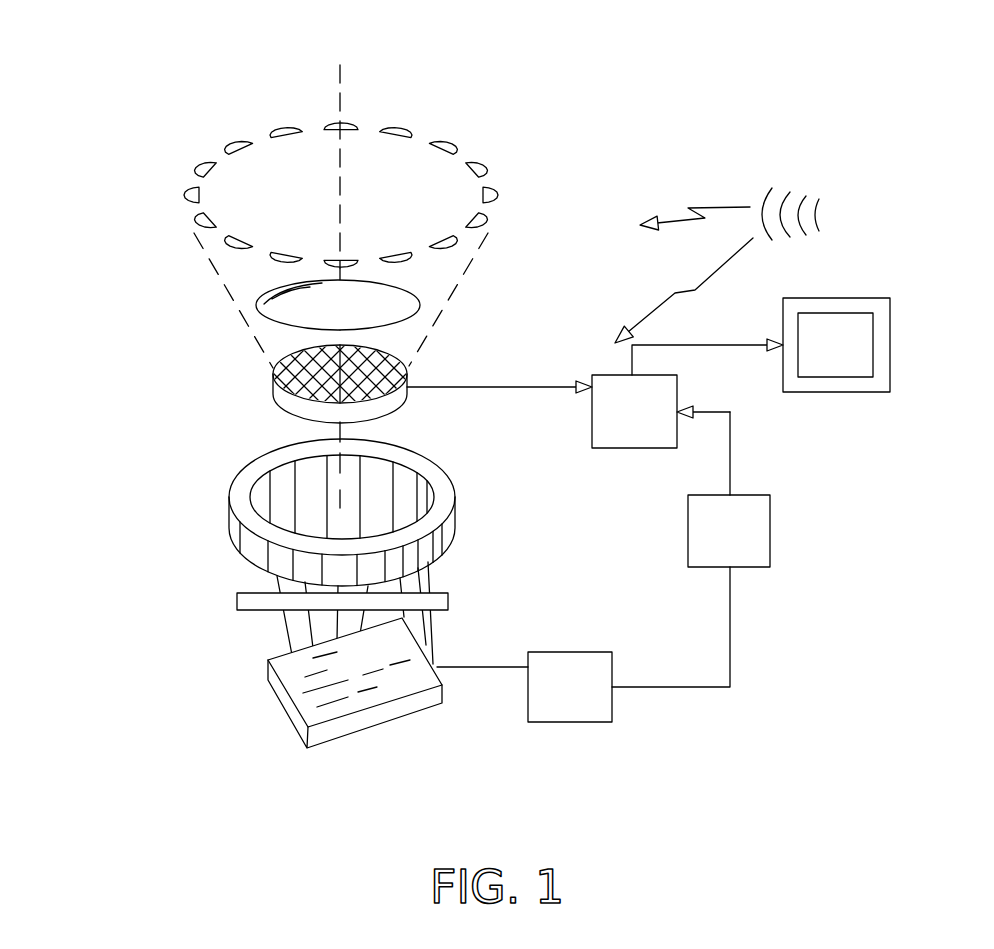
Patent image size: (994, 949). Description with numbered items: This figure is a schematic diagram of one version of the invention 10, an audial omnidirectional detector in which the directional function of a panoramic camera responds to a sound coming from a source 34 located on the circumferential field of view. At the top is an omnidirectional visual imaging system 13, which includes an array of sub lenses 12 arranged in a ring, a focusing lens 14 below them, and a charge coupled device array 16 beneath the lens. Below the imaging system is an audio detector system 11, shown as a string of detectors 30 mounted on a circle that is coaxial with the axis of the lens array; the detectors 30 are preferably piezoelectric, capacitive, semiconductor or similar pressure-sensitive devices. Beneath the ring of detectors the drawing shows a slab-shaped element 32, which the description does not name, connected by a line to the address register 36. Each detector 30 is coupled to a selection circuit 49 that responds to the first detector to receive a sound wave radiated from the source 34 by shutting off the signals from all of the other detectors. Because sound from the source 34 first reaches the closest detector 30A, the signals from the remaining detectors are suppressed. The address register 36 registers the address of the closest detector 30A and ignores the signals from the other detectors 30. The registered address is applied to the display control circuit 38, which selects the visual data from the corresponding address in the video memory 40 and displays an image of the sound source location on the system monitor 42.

The invention 10 is at (343, 100).
The audio detector system 11 is at (485, 540).
The array of sub lenses 12 is at (181, 193).
The omnidirectional visual imaging system 13 is at (473, 310).
The focusing lens 14 is at (262, 305).
The charge coupled device array 16 is at (273, 378).
The detectors 30 is at (280, 563).
The closest detector 30A is at (410, 478).
The image sensor 32 is at (312, 688).
The source 34 is at (820, 213).
The address register 36 is at (586, 703).
The display control circuit 38 is at (745, 547).
The video memory 40 is at (650, 421).
The system monitor 42 is at (852, 361).
The selection circuit 49 is at (238, 600).